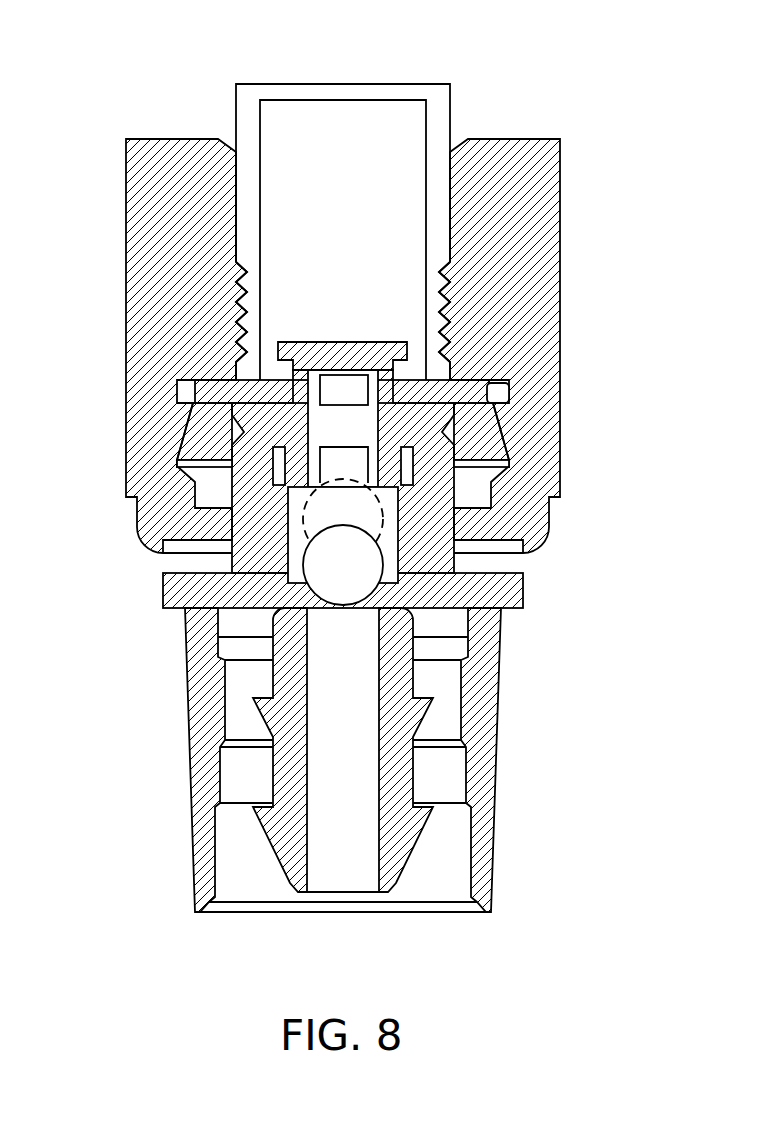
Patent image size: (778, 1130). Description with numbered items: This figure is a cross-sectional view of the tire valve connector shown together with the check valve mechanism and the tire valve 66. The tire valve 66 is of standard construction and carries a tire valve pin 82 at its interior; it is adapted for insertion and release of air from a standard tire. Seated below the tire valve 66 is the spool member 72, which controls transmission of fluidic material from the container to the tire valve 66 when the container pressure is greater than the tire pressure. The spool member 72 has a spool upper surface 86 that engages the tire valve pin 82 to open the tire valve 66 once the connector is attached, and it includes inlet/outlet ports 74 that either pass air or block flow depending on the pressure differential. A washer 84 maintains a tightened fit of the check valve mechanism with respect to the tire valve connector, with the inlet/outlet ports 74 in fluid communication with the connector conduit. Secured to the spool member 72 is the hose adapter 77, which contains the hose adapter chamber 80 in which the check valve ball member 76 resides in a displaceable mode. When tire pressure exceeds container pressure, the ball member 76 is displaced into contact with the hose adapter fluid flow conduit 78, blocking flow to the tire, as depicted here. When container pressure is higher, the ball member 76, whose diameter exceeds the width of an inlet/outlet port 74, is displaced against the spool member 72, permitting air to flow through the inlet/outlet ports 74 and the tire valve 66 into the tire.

The tire valve 66 is at (413, 83).
The tire valve pin 82 is at (370, 165).
The spool upper surface 86 is at (308, 341).
The inlet/outlet ports 74 is at (270, 460).
The spool member 72 is at (462, 425).
The washer 84 is at (212, 390).
The check valve ball member 76 is at (383, 548).
The hose adapter chamber 80 is at (300, 545).
The hose adapter 77 is at (413, 762).
The hose adapter fluid flow conduit 78 is at (381, 832).